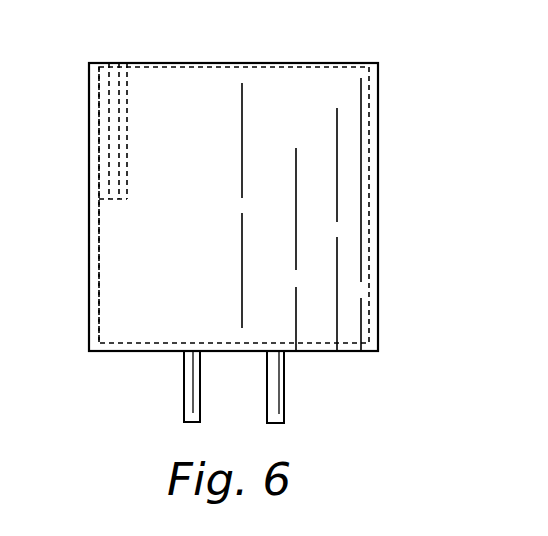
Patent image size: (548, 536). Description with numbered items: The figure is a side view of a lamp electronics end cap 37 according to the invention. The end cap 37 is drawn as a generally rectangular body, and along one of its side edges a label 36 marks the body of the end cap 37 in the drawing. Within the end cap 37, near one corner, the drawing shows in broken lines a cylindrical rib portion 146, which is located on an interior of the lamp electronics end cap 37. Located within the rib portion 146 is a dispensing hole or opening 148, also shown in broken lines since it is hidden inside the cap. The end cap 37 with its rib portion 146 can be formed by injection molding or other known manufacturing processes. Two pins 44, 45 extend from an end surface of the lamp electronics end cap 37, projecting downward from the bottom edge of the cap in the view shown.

The capacitor body 36 is at (378, 201).
The lamp electronics end cap 37 is at (266, 115).
The pin 44 is at (188, 391).
The pin 45 is at (282, 386).
The cylindrical rib portion 146 is at (118, 156).
The dispensing hole 148 is at (112, 75).